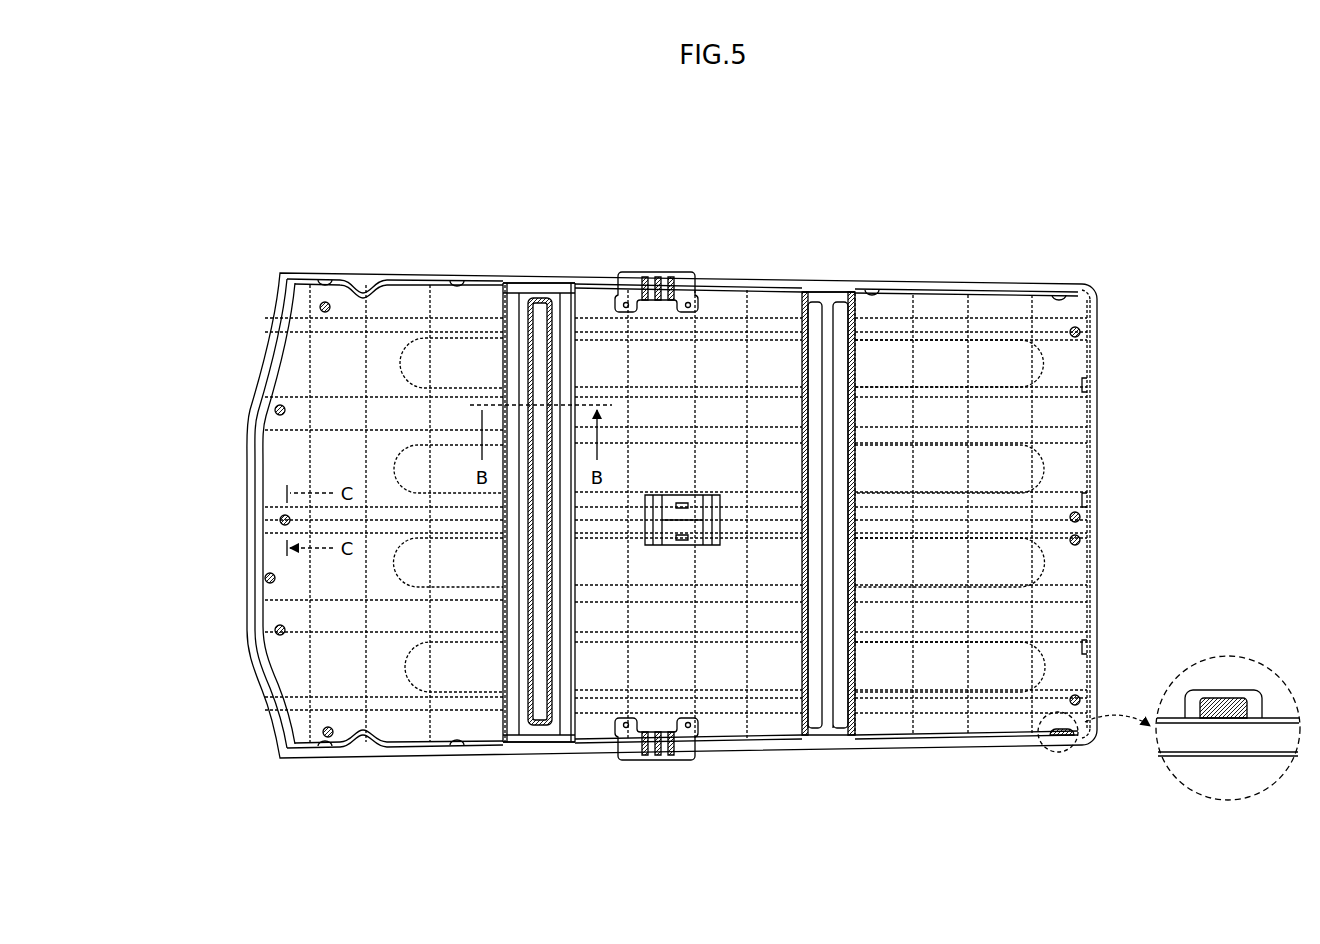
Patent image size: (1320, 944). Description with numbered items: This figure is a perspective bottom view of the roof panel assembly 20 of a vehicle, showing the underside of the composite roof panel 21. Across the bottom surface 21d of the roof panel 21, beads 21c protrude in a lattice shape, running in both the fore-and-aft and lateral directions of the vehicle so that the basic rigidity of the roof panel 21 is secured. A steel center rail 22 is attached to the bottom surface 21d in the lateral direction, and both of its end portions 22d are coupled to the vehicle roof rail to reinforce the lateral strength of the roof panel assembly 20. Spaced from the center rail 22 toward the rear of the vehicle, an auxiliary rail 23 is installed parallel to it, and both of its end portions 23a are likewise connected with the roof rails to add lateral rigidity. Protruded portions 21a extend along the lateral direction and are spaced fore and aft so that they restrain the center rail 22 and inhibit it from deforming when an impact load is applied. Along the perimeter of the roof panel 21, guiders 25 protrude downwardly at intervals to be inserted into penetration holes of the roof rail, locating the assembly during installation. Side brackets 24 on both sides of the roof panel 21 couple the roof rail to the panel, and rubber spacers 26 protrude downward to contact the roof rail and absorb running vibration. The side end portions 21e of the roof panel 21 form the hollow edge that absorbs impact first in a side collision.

The roof panel assembly 20 is at (1062, 268).
The roof panel 21 is at (975, 312).
The protruded portions 21a is at (505, 370).
The beads 21c is at (308, 370).
The bottom surface 21d is at (983, 680).
The side end portions 21e is at (580, 278).
The center rail 22 is at (538, 337).
The end portions 22d is at (535, 277).
The auxiliary rail 23 is at (828, 320).
The end portions 23a is at (810, 284).
The side brackets 24 is at (657, 275).
The guiders 25 is at (285, 521).
The spacers 26 is at (1225, 718).